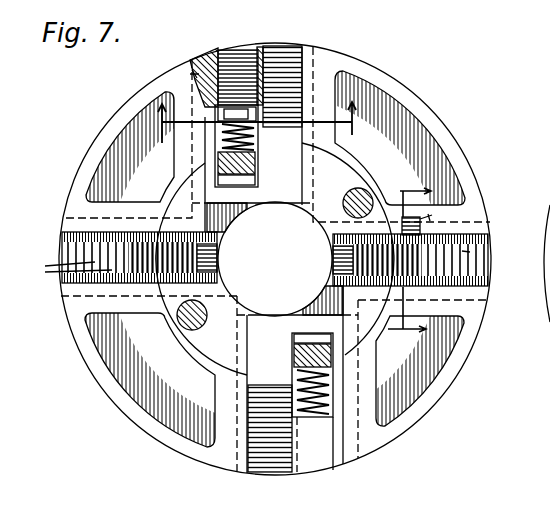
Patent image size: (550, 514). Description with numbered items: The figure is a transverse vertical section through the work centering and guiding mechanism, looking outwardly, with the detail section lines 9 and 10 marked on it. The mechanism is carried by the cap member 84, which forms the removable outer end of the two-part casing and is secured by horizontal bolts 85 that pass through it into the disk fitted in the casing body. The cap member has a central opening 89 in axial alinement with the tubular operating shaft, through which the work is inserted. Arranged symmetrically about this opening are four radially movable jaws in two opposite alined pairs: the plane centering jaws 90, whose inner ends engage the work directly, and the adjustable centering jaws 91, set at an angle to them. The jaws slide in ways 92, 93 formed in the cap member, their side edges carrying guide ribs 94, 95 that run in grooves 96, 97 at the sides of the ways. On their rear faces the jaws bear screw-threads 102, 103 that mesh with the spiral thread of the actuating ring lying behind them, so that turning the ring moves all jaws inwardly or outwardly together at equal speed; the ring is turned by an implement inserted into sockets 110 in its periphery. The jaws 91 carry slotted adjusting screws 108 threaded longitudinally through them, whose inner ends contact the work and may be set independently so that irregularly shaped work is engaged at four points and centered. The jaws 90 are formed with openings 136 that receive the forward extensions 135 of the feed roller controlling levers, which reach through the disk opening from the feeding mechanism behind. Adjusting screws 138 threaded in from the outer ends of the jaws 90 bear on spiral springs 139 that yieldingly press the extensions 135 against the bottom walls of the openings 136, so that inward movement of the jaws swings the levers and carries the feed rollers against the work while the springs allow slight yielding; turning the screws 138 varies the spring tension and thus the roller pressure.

The section line 9— 9 is at (258, 131).
The section line 10— 10 is at (408, 268).
The cap member 84 is at (100, 150).
The bolts 85 is at (350, 196).
The opening 89 is at (234, 309).
The centering jaws 90 is at (280, 152).
The centering jaws 91 is at (62, 246).
The ways 92 is at (213, 206).
The ways 93 is at (219, 242).
The guide ribs 94 is at (196, 100).
The guide ribs 95 is at (427, 232).
The grooves 96 is at (192, 70).
The grooves 97 is at (428, 220).
The screw-threads 102 is at (299, 50).
The screw-threads 103 is at (498, 249).
The adjusting screws 108 is at (217, 261).
The sockets 110 is at (544, 274).
The forward extensions 135 is at (253, 161).
The openings 136 is at (244, 175).
The adjusting screws 138 is at (243, 48).
The spiral springs 139 is at (203, 118).